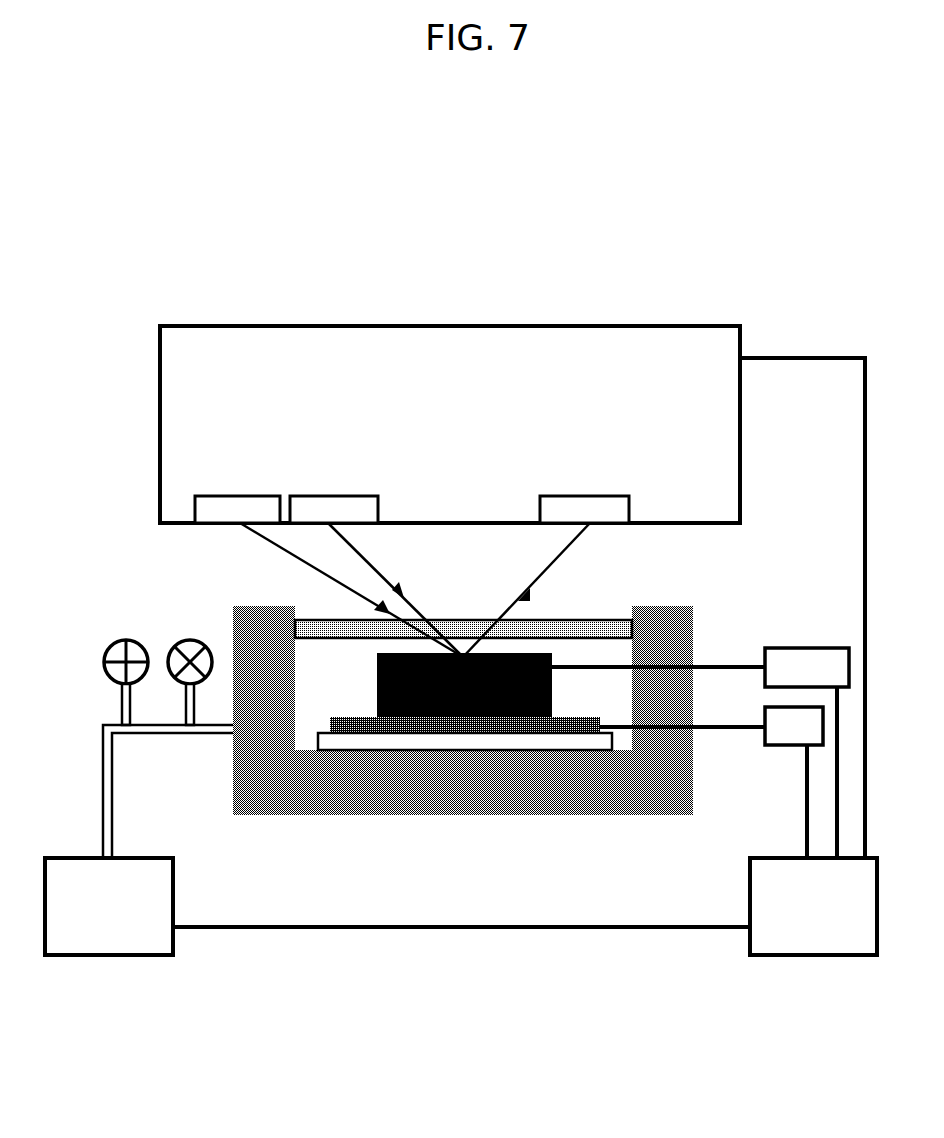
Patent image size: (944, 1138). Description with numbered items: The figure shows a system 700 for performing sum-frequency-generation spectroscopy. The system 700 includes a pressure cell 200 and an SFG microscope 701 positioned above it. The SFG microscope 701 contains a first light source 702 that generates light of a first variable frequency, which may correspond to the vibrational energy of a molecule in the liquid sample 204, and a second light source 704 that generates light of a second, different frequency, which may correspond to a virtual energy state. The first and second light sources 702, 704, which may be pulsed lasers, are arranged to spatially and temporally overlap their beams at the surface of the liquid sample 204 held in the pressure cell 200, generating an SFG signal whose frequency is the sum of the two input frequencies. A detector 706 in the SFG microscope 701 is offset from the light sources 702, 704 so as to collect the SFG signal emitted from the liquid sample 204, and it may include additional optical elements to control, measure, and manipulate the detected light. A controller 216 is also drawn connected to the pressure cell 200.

The system for performing SFG spectroscopy 700 is at (205, 190).
The SFG microscope 701 is at (408, 326).
The first light source 702 is at (265, 497).
The second light source 704 is at (360, 497).
The detector 706 is at (608, 497).
The pressure cell 200 is at (312, 960).
The liquid sample 204 is at (470, 683).
The controller 216 is at (813, 906).